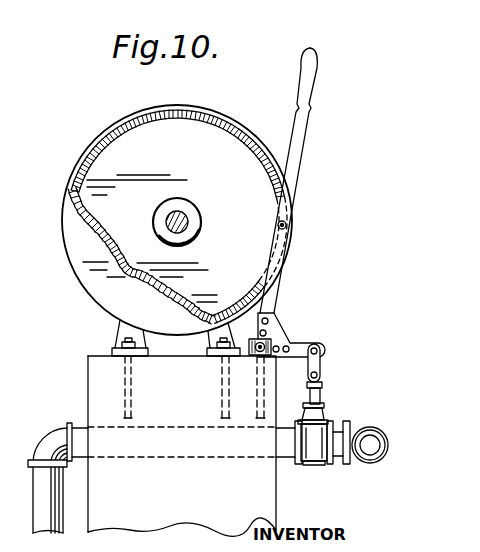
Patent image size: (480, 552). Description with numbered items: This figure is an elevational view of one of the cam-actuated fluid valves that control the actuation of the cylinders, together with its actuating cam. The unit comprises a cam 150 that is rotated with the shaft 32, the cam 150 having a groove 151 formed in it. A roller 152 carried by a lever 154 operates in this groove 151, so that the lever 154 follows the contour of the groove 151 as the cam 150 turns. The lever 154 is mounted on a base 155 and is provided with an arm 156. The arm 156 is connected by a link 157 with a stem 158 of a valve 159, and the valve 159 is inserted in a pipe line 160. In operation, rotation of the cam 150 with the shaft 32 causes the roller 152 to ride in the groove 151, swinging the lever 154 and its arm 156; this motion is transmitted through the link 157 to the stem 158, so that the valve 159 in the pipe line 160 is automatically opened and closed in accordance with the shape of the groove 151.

The cam 150 is at (175, 130).
The groove 151 is at (83, 220).
The shaft 32 is at (179, 213).
The lever 154 is at (297, 153).
The roller 152 is at (288, 233).
The base 155 is at (97, 380).
The arm 156 is at (307, 348).
The link 157 is at (318, 363).
The stem 158 is at (321, 385).
The valve 159 is at (321, 463).
The pipe line 160 is at (283, 458).